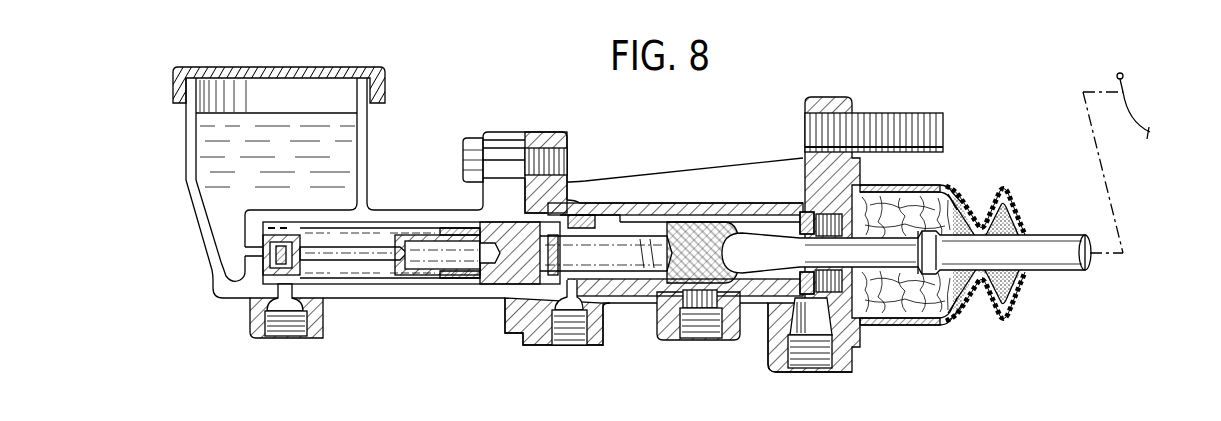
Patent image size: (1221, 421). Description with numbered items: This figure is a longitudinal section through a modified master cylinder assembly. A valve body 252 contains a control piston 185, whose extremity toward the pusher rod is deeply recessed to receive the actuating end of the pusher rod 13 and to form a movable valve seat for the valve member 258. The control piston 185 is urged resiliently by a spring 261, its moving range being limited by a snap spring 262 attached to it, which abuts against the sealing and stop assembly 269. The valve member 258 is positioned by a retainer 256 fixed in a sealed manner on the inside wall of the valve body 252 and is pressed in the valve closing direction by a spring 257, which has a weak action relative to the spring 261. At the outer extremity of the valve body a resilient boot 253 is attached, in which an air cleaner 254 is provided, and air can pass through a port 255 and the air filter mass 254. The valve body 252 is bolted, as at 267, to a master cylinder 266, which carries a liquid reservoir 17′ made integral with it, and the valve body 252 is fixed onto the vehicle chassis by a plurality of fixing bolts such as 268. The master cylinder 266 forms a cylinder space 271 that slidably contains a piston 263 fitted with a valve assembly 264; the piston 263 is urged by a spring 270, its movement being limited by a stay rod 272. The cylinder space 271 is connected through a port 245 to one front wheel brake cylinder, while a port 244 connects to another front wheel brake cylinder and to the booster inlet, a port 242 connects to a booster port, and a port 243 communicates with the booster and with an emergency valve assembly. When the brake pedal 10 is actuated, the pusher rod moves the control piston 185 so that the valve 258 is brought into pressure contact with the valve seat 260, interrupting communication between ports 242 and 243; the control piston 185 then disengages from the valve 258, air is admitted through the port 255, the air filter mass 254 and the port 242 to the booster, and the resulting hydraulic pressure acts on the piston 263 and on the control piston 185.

The liquid reservoir 17′ is at (362, 140).
The master cylinder 266 is at (432, 223).
The bolt 267 is at (513, 150).
The sealing and stop assembly 269 is at (583, 202).
The cylinder space 271 is at (345, 272).
The valve assembly 264 is at (260, 282).
The stay rod 272 is at (372, 247).
The spring 270 is at (405, 280).
The piston 263 is at (490, 285).
The valve body 252 is at (662, 205).
The spring 261 is at (640, 297).
The control piston 185 is at (700, 232).
The valve member 258 is at (800, 212).
The fixing bolt 268 is at (887, 128).
The valve seat 260 is at (785, 318).
The port 243 is at (815, 373).
The port 245 is at (288, 339).
The snap spring 262 is at (532, 333).
The port 244 is at (570, 346).
The port 242 is at (705, 342).
The air cleaner 254 is at (948, 320).
The port 255 is at (915, 326).
The retainer 256 is at (902, 218).
The spring 257 is at (902, 292).
The resilient boot 253 is at (1010, 318).
The pusher rod 13 is at (1060, 245).
The brake pedal 10 is at (1150, 131).